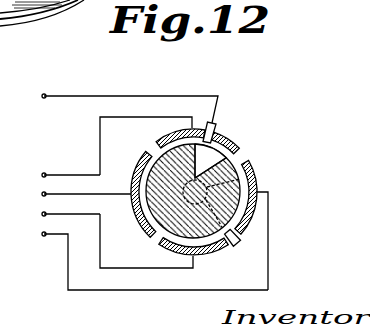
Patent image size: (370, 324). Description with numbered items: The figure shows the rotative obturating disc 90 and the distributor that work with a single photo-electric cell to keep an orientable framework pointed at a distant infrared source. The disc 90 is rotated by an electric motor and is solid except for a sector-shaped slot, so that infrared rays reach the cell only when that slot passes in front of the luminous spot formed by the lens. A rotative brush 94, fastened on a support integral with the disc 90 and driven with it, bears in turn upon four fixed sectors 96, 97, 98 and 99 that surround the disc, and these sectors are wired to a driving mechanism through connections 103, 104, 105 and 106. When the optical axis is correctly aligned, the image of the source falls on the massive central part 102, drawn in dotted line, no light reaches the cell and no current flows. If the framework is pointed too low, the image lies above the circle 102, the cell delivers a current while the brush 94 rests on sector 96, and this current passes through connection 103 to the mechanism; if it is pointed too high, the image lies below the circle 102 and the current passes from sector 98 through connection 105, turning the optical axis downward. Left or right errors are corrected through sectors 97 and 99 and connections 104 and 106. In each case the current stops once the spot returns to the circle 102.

The rotative obturating disc 90 is at (217, 225).
The rotative brush 94 is at (273, 135).
The fixed sector 96 is at (192, 128).
The fixed sector 97 is at (269, 199).
The fixed sector 98 is at (195, 259).
The fixed sector 99 is at (131, 195).
The massive central part 102 is at (268, 177).
The connection 103 is at (149, 120).
The connection 104 is at (154, 291).
The connection 105 is at (144, 251).
The connection 106 is at (72, 193).